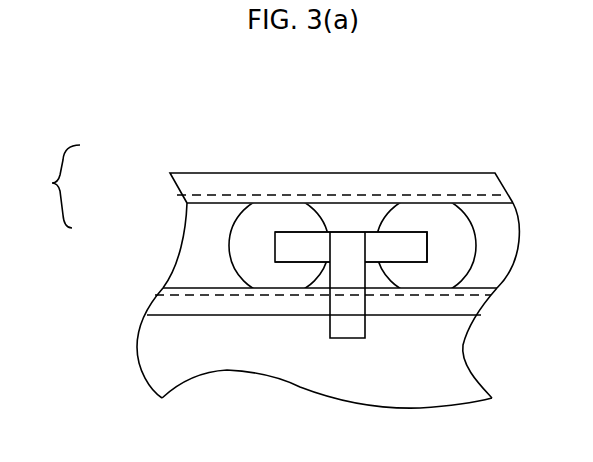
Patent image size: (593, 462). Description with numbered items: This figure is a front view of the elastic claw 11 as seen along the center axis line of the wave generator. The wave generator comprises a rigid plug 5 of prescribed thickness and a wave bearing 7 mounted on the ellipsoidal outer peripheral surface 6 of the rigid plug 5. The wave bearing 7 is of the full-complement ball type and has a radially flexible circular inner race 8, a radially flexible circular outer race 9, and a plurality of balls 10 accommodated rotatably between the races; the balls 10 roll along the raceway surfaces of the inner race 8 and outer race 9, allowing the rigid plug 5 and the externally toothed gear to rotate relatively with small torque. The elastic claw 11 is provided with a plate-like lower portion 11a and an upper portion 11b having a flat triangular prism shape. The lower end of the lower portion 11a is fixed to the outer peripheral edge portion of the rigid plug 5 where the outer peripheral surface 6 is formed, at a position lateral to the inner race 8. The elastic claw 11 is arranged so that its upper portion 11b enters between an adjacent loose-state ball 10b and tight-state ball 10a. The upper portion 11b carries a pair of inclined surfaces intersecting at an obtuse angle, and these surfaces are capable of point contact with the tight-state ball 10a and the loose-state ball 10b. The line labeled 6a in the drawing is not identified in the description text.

The rigid plug 5 is at (137, 352).
The outer peripheral surface 6 is at (188, 308).
The lower layer inner line 6a is at (447, 313).
The wave bearing 7 is at (54, 186).
The inner race 8 is at (227, 278).
The outer race 9 is at (193, 170).
The balls 10 is at (200, 232).
The tight-state ball 10a is at (478, 223).
The loose-state ball 10b is at (213, 203).
The elastic claw 11 is at (413, 224).
The lower portion 11a is at (352, 328).
The upper portion 11b is at (350, 231).